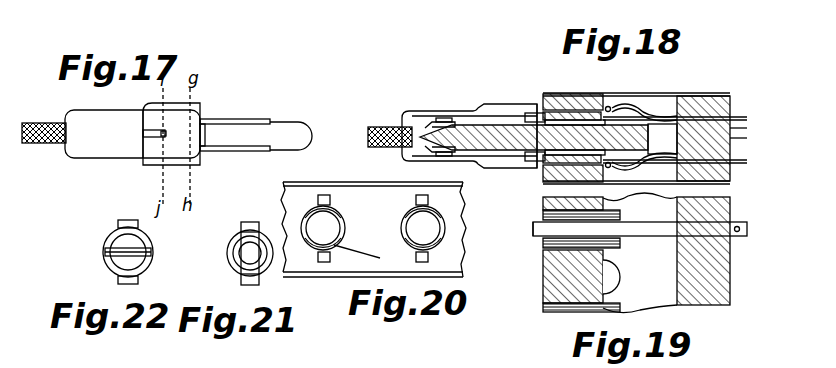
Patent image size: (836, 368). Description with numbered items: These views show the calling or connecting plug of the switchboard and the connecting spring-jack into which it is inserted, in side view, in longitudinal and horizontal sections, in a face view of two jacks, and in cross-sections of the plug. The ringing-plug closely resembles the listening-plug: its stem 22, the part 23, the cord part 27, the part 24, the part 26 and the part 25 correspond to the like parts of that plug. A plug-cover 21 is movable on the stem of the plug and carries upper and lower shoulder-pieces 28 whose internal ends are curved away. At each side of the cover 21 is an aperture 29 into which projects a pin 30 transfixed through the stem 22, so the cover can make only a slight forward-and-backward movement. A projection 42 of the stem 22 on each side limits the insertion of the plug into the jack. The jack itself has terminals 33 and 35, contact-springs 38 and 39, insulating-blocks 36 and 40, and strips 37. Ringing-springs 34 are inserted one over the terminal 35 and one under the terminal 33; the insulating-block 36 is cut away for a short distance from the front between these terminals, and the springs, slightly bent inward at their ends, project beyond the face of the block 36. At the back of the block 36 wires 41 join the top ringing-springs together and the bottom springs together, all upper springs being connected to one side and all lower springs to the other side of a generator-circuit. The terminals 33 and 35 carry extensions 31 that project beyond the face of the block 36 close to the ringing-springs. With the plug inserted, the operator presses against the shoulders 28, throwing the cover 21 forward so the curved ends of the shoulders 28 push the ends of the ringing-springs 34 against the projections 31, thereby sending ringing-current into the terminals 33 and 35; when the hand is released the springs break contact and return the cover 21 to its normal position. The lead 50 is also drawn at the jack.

In FIG. 17, the plug-cover 21 is at (132, 134).
In FIG. 21, the plug-cover 21 is at (234, 250).
In FIG. 17, the plug stem 22 is at (291, 136).
In FIG. 21, the plug stem 22 is at (250, 253).
In FIG. 18, the plug stem 22 is at (662, 139).
In FIG. 17, the plug part corresponding to part 3 23 is at (258, 119).
In FIG. 22, the plug part corresponding to part 4 24 is at (108, 268).
In FIG. 21, the plug part corresponding to part 4 24 is at (230, 238).
In FIG. 18, the plug part corresponding to part 4 24 is at (480, 108).
In FIG. 18, the plug part corresponding to part 5 25 is at (440, 122).
In FIG. 18, the plug part corresponding to part 6 26 is at (448, 118).
In FIG. 17, the plug part corresponding to part 7 27 is at (43, 145).
In FIG. 18, the plug part corresponding to part 7 27 is at (390, 125).
In FIG. 17, the shoulder-pieces 28 is at (200, 107).
In FIG. 22, the shoulder-pieces 28 is at (122, 222).
In FIG. 21, the shoulder-pieces 28 is at (245, 222).
In FIG. 18, the shoulder-pieces 28 is at (515, 104).
In FIG. 17, the aperture 29 is at (150, 138).
In FIG. 22, the aperture 29 is at (108, 245).
In FIG. 17, the pin 30 is at (162, 137).
In FIG. 22, the pin 30 is at (105, 252).
In FIG. 20, the extensions of terminals 31 is at (520, 260).
In FIG. 18, the extensions of terminals 31 is at (540, 113).
In FIG. 19, the extensions of terminals 31 is at (533, 238).
In FIG. 20, the terminal 33 is at (408, 248).
In FIG. 18, the terminal 33 is at (548, 163).
In FIG. 20, the ringing-springs 34 is at (318, 198).
In FIG. 18, the ringing-springs 34 is at (573, 94).
In FIG. 19, the ringing-springs 34 is at (573, 203).
In FIG. 20, the terminal 35 is at (343, 212).
In FIG. 18, the terminal 35 is at (690, 96).
In FIG. 19, the terminal 35 is at (525, 330).
In FIG. 20, the insulating-block 36 is at (373, 232).
In FIG. 18, the insulating-block 36 is at (611, 108).
In FIG. 19, the insulating-block 36 is at (573, 276).
In FIG. 20, the strips 37 is at (338, 182).
In FIG. 18, the strips 37 is at (730, 94).
In FIG. 19, the strips 37 is at (634, 277).
In FIG. 18, the contact-spring 38 is at (747, 162).
In FIG. 18, the contact-spring 39 is at (747, 118).
In FIG. 19, the contact-spring 39 is at (747, 232).
In FIG. 18, the insulating-block 40 is at (747, 138).
In FIG. 19, the insulating-block 40 is at (730, 282).
In FIG. 18, the wires 41 is at (640, 105).
In FIG. 17, the projection 42 is at (205, 135).
In FIG. 21, the projection 42 is at (232, 244).
In FIG. 18, the projection 42 is at (534, 137).
In FIG. 18, the lead wire 50 is at (747, 128).